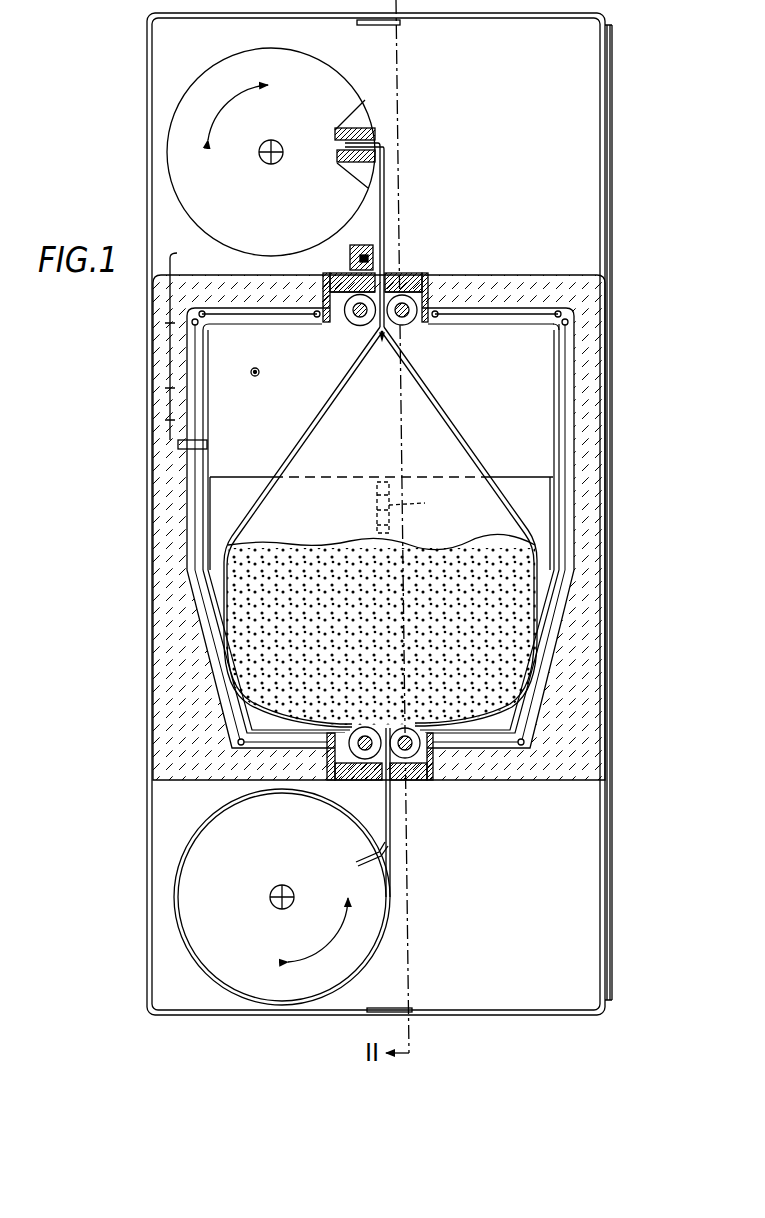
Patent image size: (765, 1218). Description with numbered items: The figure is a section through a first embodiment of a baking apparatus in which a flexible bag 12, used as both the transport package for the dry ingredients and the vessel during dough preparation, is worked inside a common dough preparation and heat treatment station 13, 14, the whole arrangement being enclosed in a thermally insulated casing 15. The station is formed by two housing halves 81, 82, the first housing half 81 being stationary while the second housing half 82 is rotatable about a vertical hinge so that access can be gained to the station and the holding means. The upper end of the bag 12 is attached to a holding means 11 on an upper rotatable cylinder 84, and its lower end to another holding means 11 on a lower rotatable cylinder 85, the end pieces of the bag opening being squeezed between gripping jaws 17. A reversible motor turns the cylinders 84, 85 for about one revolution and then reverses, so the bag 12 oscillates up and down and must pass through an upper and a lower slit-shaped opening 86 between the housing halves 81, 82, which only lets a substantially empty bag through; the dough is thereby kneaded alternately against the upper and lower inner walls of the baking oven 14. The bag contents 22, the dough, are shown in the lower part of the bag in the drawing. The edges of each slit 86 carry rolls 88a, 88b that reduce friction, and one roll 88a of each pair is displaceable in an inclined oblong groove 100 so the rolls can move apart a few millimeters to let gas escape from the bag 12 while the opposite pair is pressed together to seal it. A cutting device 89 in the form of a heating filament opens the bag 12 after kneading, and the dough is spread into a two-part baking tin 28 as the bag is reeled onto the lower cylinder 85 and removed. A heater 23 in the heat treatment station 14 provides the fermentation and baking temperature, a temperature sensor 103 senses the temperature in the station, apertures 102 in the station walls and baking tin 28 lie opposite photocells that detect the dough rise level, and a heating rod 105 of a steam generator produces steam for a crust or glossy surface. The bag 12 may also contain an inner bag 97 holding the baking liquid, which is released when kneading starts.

The holding means 11 is at (387, 138).
The flexible bag 12 is at (482, 462).
The dough preparation station 13 is at (525, 370).
The heat treatment station 14 is at (600, 330).
The thermally insulated casing 15 is at (602, 367).
The gripping jaws 17 is at (358, 118).
The particulate material 22 is at (338, 636).
The heater 23 is at (568, 427).
The baking tin 28 is at (555, 535).
The stationary housing half 81 is at (167, 486).
The movable housing half 82 is at (597, 547).
The upper rotatable cylinder 84 is at (335, 95).
The lower rotatable cylinder 85 is at (353, 948).
The slit-shaped opening 86 is at (385, 267).
The displaceable roll 88a is at (330, 328).
The roll 88b is at (407, 322).
The cutting device 89 is at (373, 257).
The inner bag 97 is at (381, 345).
The inclined oblong groove 100 is at (353, 327).
The apertures 102 is at (425, 507).
The temperature sensor 103 is at (210, 444).
The heating rod 105 is at (252, 375).